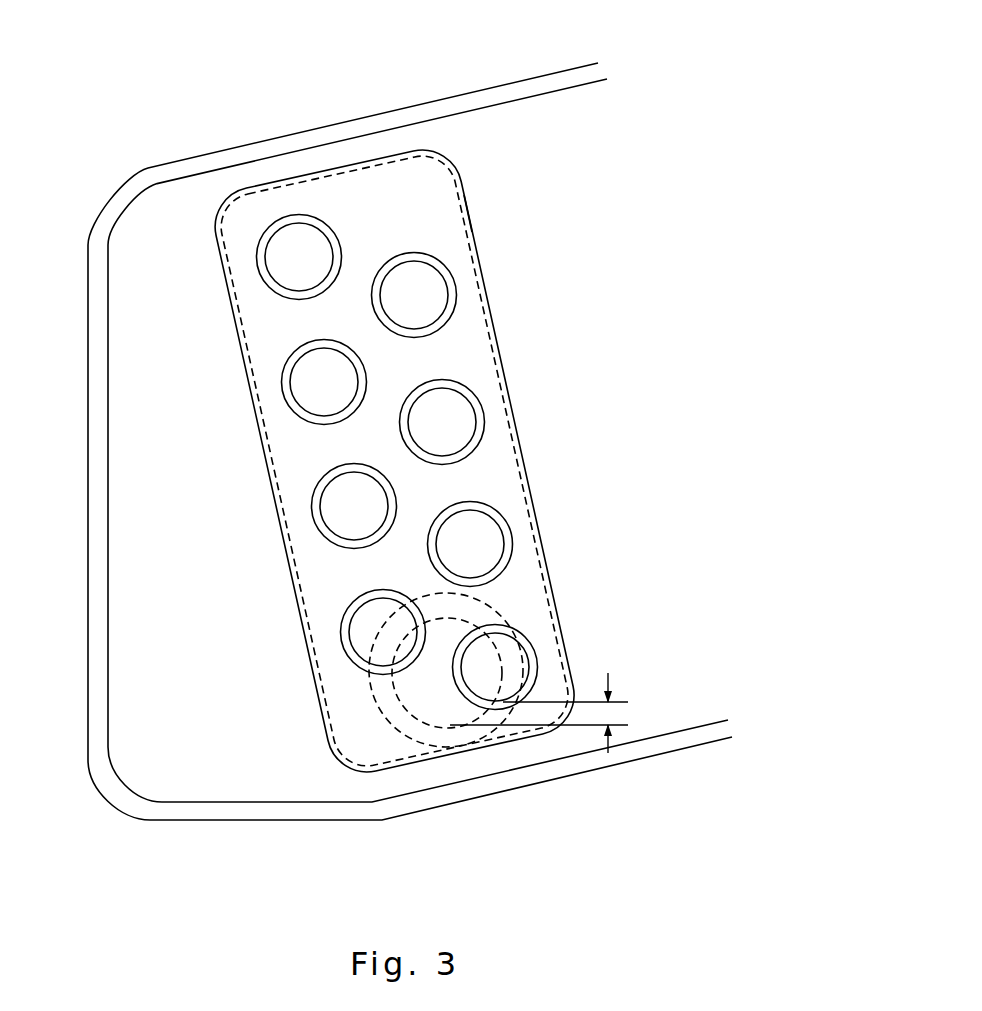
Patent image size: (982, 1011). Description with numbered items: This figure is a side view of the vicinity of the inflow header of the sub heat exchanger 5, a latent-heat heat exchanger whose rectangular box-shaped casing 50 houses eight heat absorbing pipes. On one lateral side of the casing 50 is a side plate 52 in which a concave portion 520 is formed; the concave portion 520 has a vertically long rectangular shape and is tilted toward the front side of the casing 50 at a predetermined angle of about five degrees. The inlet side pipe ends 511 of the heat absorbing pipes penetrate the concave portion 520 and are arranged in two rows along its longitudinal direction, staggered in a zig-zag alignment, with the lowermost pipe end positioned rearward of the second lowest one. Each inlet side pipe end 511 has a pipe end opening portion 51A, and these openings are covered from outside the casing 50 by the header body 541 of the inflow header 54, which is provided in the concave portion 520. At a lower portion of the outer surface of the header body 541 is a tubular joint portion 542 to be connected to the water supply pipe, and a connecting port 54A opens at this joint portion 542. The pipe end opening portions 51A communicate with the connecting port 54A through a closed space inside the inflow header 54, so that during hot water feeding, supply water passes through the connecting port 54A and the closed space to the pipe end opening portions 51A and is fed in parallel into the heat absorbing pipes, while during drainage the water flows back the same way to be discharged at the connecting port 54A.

The sub heat exchanger 5 is at (410, 410).
The casing 50 is at (272, 138).
The side plate 52 is at (167, 220).
The concave portion 520 is at (470, 240).
The inflow header 54 is at (378, 197).
The header body 541 is at (527, 433).
The joint portion 542 is at (392, 722).
The connecting port 54A is at (437, 683).
The pipe end opening portion 51A is at (285, 253).
The inlet side pipe end 511 is at (456, 290).